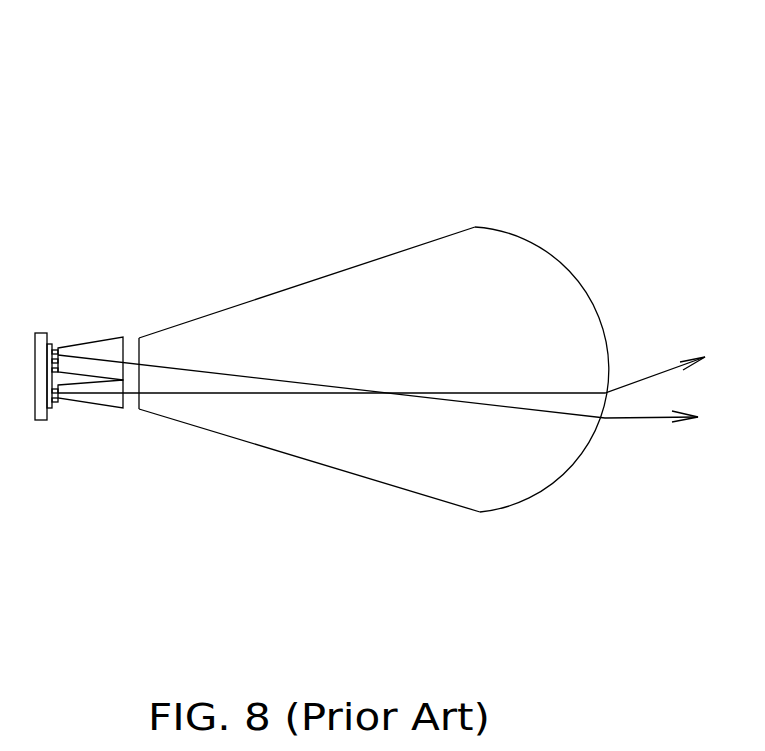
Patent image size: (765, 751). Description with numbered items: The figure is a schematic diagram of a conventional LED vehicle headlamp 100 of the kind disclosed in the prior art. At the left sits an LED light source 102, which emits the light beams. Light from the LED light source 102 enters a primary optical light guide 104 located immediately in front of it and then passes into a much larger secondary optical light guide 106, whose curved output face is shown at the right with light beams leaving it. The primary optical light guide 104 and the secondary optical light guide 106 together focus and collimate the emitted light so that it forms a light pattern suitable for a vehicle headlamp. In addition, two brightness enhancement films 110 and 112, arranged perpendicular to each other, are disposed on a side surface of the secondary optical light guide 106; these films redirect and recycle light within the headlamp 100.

The vehicle headlamp 100 is at (126, 76).
The LED light source 102 is at (43, 420).
The primary optical light guide 104 is at (90, 342).
The secondary optical light guide 106 is at (374, 354).
The brightness enhancement film 110 is at (287, 289).
The brightness enhancement film 112 is at (342, 471).